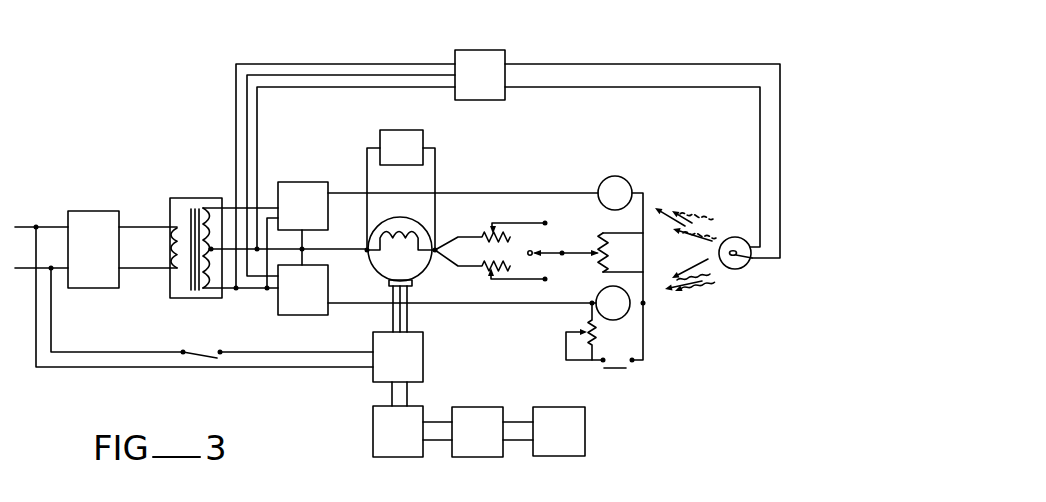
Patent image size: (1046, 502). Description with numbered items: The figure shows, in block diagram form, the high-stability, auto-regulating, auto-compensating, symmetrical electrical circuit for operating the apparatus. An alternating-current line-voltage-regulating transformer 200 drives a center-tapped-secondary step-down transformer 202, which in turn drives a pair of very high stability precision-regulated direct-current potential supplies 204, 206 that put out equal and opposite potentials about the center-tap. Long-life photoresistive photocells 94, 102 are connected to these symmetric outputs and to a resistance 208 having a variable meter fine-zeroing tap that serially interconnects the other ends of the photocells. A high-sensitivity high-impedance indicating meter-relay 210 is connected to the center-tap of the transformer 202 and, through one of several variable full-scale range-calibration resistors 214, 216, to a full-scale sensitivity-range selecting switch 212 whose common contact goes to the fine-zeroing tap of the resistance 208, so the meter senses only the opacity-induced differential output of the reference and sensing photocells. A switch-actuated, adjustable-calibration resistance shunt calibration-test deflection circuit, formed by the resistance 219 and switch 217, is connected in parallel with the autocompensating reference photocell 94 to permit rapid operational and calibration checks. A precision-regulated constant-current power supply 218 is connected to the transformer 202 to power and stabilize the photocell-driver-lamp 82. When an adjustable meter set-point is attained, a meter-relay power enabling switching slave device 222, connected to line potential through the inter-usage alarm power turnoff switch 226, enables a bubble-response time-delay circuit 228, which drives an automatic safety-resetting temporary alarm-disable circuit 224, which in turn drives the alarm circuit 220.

The photocell-driver-lamp 82 is at (736, 237).
The autocompensating reference photocell 94 is at (600, 290).
The photocell 102 is at (605, 178).
The alternating-current line-voltage-regulating transformer 200 is at (101, 211).
The center-tapped-secondary step-down transformer 202 is at (191, 198).
The precision-regulated direct-current potential supply 204 is at (290, 315).
The precision-regulated direct-current potential supply 206 is at (310, 182).
The resistance 208 is at (627, 252).
The indicating meter-relay 210 is at (375, 228).
The full-scale sensitivity-range selecting switch 212 is at (562, 238).
The variable full-scale range-calibration resistor 214 is at (487, 267).
The variable full-scale range-calibration resistor 216 is at (470, 237).
The calibration-test deflection-circuit switch 217 is at (630, 371).
The constant-current power supply 218 is at (487, 50).
The adjustable-calibration resistance shunt 219 is at (578, 325).
The alarm circuit 220 is at (568, 456).
The meter-relay power enabling switching slave device 222 is at (423, 358).
The automatic safety-resetting temporary alarm-disable circuit 224 is at (478, 457).
The inter-usage alarm power turnoff switch 226 is at (197, 359).
The bubble-response time-delay circuit 228 is at (373, 437).